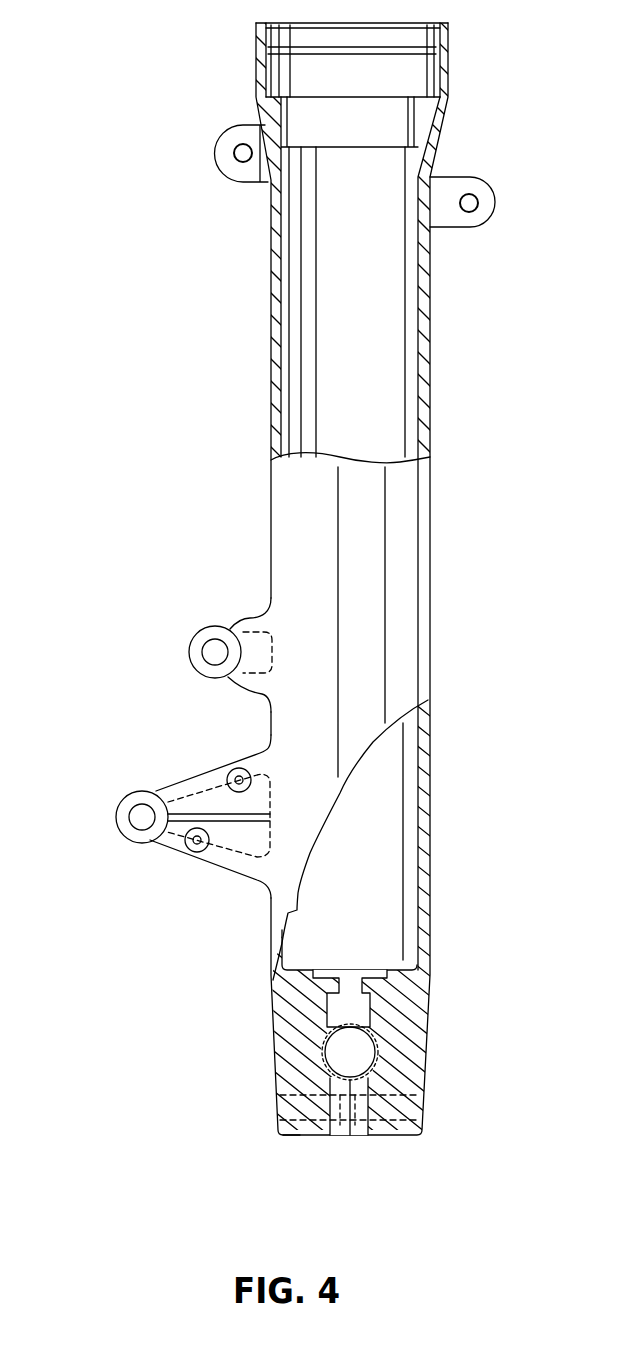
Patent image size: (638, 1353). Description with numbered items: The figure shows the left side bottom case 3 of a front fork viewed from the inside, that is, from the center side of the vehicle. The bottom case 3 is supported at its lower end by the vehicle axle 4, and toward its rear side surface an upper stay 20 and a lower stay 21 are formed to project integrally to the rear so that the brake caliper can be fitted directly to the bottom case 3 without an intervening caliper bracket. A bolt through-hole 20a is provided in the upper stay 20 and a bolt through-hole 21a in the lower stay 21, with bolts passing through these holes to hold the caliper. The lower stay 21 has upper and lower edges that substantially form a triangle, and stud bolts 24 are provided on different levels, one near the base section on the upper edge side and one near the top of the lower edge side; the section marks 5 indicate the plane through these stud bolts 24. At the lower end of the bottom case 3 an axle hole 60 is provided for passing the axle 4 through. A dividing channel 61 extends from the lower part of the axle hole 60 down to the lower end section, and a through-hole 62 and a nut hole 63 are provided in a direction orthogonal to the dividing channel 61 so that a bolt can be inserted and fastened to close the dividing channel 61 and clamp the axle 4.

The bottom case 3 is at (271, 283).
The vehicle axle 4 is at (377, 922).
The section line V-V 5 is at (223, 728).
The upper stay 20 is at (186, 625).
The bolt through-hole 20a is at (215, 652).
The lower stay 21 is at (160, 816).
The bolt through-hole 21a is at (141, 817).
The stud bolts 24 is at (228, 769).
The axle hole 60 is at (363, 1045).
The dividing channel 61 is at (337, 1139).
The through-hole 62 is at (398, 1139).
The nut hole 63 is at (294, 1140).